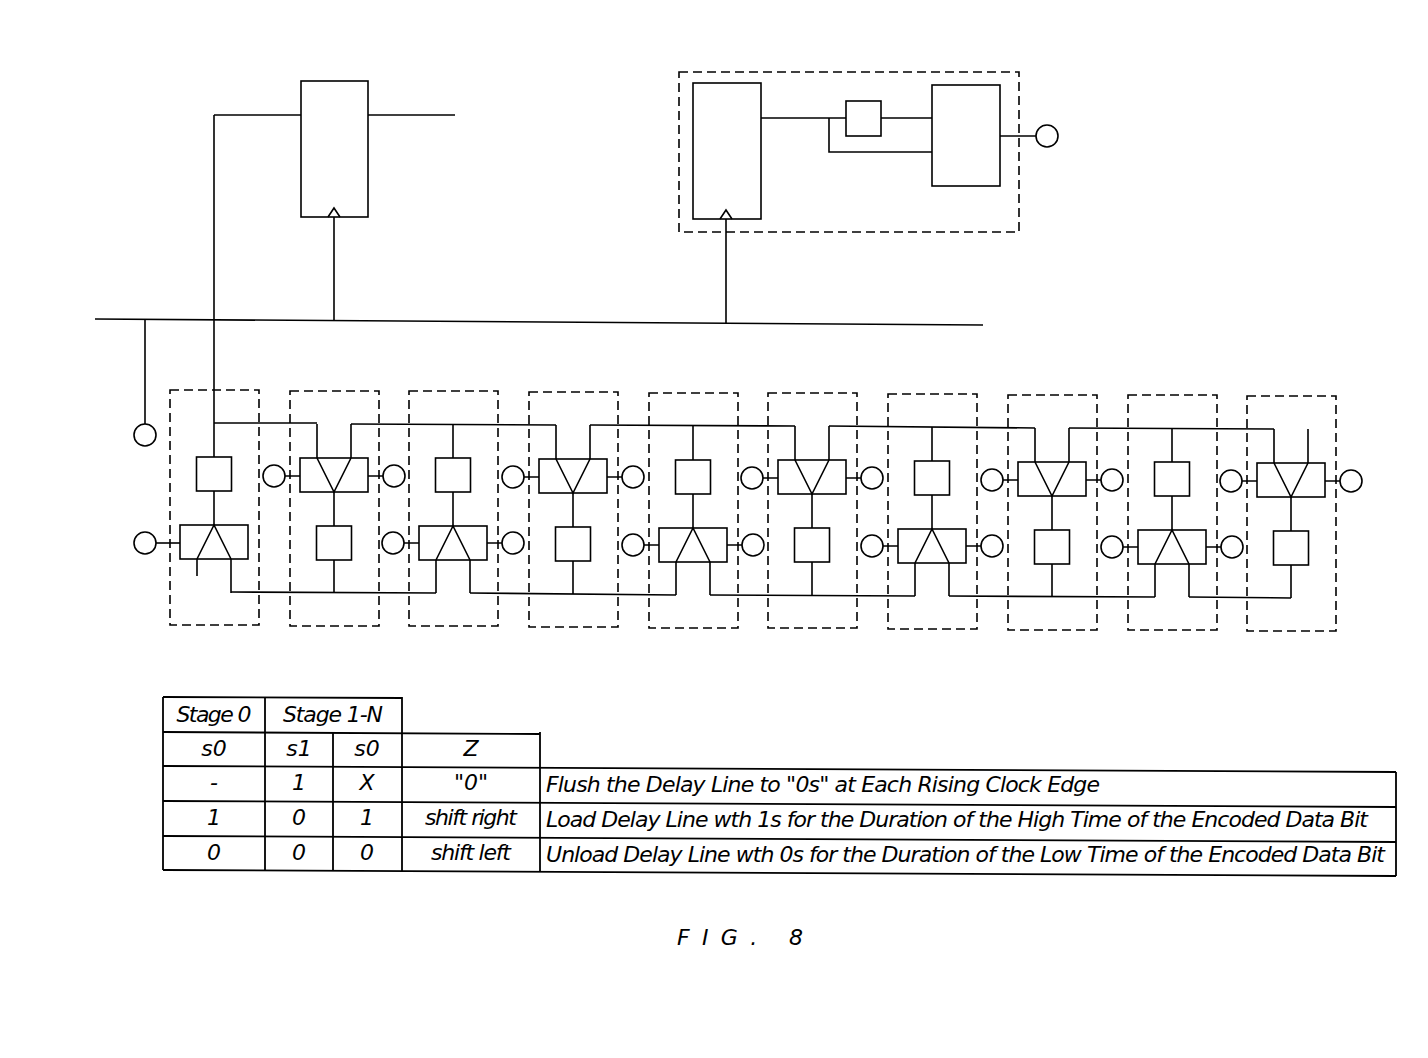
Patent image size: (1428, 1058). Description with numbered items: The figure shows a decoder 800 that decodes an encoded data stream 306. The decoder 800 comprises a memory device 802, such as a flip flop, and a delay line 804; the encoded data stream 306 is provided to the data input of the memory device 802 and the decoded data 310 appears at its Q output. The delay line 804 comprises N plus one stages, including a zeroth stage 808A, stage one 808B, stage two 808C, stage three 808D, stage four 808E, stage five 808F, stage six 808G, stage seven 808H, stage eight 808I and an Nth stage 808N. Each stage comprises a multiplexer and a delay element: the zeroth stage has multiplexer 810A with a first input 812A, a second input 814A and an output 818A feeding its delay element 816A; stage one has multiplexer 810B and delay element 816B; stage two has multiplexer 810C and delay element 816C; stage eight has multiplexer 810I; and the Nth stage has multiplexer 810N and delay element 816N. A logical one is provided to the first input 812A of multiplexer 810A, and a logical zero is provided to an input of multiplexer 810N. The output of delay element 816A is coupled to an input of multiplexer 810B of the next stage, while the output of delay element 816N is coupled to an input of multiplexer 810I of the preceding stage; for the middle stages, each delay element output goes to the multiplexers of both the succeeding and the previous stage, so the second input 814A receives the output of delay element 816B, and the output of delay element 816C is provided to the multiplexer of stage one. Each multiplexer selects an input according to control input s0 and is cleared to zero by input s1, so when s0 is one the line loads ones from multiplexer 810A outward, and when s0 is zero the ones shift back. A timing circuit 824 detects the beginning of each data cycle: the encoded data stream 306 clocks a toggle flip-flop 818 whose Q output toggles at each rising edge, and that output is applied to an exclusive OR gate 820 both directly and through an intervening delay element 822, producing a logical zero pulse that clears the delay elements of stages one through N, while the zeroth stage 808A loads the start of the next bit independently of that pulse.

The decoder 800 is at (187, 157).
The memory device 802 is at (335, 81).
The delay line 804 is at (1242, 316).
The encoded data stream 306 is at (539, 292).
The decoded data 310 is at (510, 117).
The zeroth stage 808A is at (218, 390).
The stage 1 808B is at (334, 516).
The stage 2 808C is at (453, 516).
The stage 3 808D is at (573, 517).
The stage 4 808E is at (693, 518).
The stage 5 808F is at (812, 518).
The stage 6 808G is at (932, 519).
The stage 7 808H is at (1052, 520).
The stage 8 808I is at (1172, 520).
The Nth stage 808N is at (1315, 521).
The zeroth stage multiplexer 810A is at (176, 532).
The stage 1 multiplexer 810B is at (334, 443).
The stage 2 multiplexer 810C is at (453, 573).
The stage 8 multiplexer 810I is at (1172, 579).
The Nth stage multiplexer 810N is at (1333, 454).
The first input 812A is at (151, 572).
The second input 814A is at (168, 585).
The delay element 816A is at (168, 474).
The delay element 816B is at (339, 574).
The delay element 816C is at (459, 443).
The delay element 816N is at (1340, 559).
The toggle flip-flop 818 is at (728, 83).
The output 818A is at (160, 502).
The exclusive OR gate 820 is at (967, 85).
The delay element 822 is at (865, 101).
The timing circuit 824 is at (995, 180).